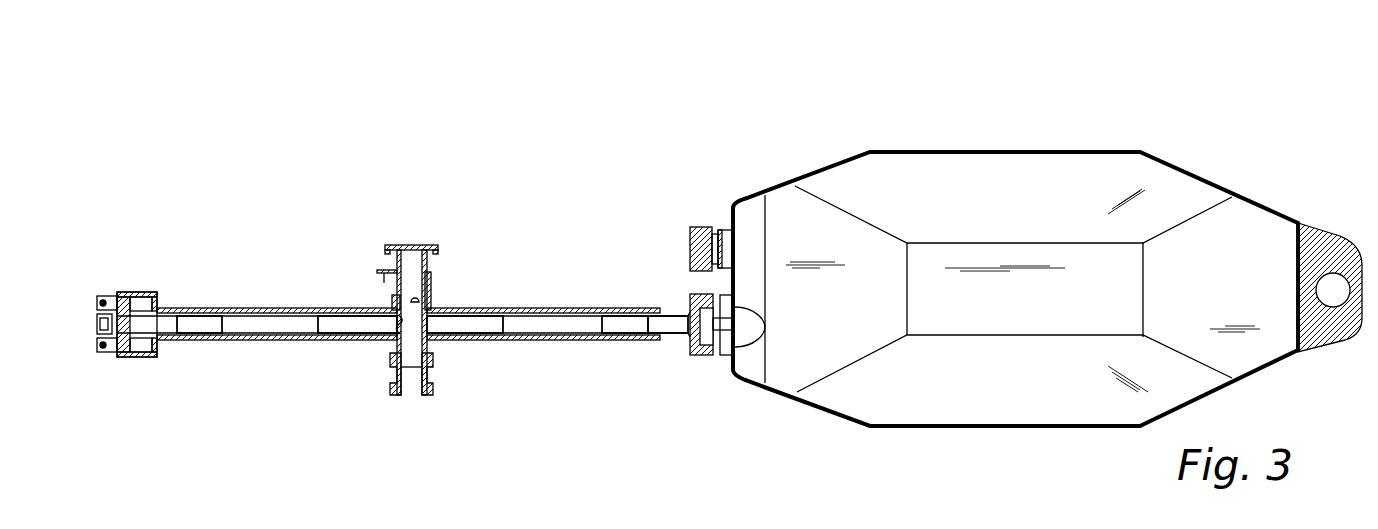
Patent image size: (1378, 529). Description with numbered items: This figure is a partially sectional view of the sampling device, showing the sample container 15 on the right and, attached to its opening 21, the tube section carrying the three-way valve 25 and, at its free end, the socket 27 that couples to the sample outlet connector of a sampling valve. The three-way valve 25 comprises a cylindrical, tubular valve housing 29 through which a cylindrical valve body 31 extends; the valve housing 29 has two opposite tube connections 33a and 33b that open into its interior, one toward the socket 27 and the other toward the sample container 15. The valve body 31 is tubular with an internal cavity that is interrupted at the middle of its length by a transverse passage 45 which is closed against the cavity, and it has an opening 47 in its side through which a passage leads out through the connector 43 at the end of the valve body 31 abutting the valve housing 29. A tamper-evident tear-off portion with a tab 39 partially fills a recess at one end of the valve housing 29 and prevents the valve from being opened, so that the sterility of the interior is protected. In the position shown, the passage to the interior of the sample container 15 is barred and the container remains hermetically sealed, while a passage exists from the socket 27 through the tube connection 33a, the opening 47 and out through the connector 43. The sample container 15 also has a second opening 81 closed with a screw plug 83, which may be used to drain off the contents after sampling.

The sample container 15 is at (1222, 162).
The opening 21 is at (706, 357).
The three-way valve 25 is at (399, 299).
The socket 27 is at (157, 268).
The valve housing 29 is at (428, 309).
The valve body 31 is at (397, 263).
The tube connection 33a is at (385, 337).
The tube connection 33b is at (437, 338).
The tab 39 is at (380, 290).
The connector 43 is at (433, 390).
The transverse passage 45 is at (428, 298).
The opening 47 is at (395, 330).
The second opening 81 is at (718, 238).
The screw plug 83 is at (689, 248).